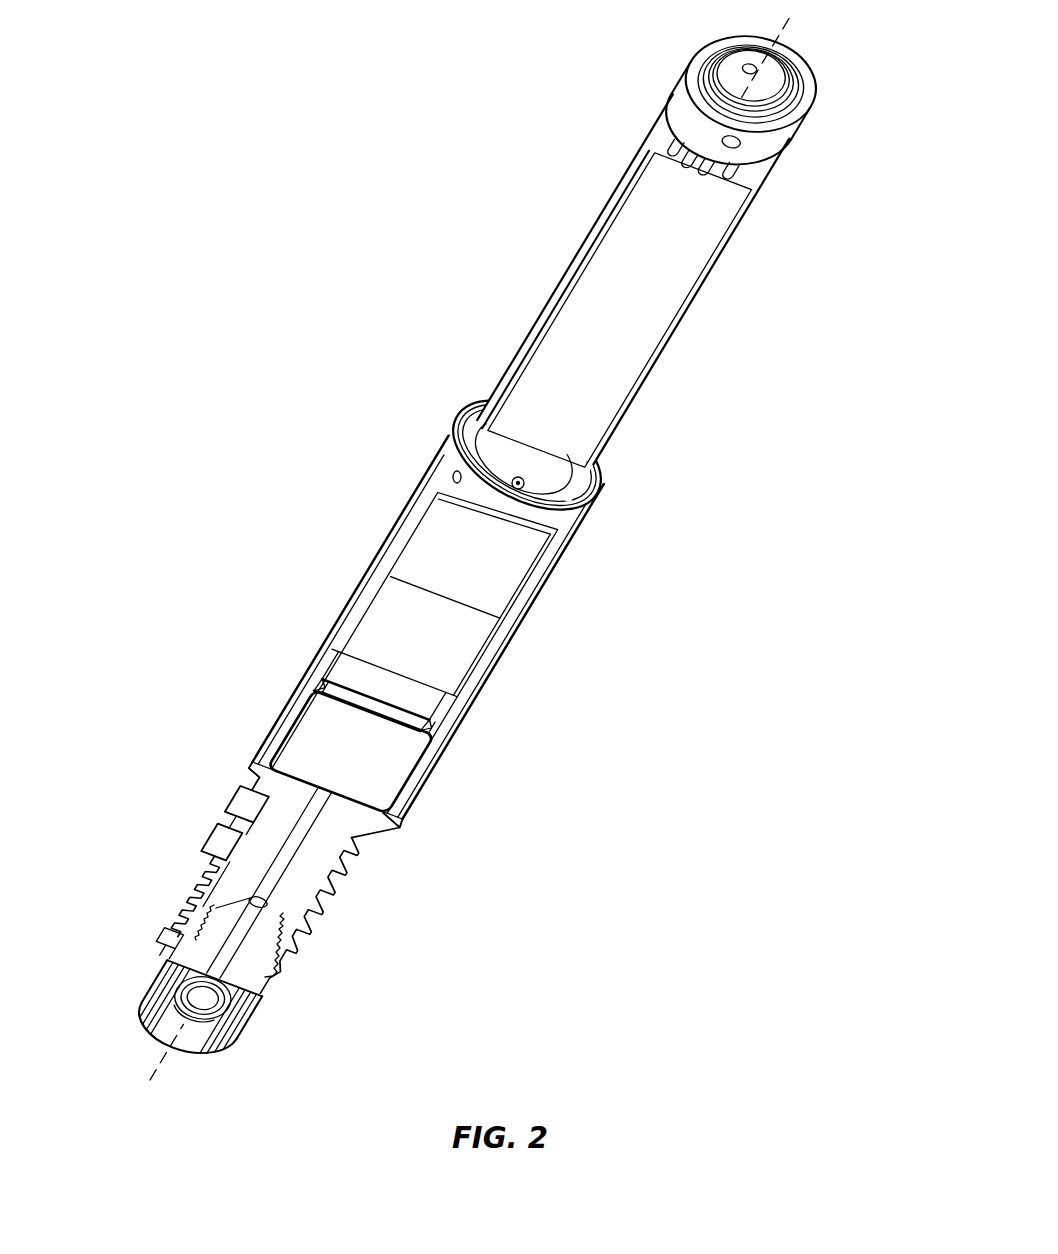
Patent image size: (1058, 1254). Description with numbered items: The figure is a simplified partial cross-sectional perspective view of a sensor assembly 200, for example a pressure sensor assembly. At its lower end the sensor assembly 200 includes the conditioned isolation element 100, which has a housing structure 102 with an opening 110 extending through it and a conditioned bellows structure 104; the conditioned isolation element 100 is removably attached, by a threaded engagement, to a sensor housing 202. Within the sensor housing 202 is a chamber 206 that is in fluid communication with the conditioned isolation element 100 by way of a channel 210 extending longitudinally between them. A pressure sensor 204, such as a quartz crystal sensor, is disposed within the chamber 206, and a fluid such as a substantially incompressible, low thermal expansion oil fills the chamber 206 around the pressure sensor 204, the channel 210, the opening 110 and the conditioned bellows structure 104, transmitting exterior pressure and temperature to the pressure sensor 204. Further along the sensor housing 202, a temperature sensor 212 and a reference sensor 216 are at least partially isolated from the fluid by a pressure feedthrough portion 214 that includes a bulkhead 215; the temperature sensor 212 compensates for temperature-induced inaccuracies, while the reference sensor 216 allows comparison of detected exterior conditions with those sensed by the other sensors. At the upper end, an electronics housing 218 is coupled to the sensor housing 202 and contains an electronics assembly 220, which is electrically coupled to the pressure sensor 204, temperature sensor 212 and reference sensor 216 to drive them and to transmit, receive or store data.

The conditioned isolation element 100 is at (160, 928).
The housing structure 102 is at (257, 952).
The conditioned bellows structure 104 is at (260, 1002).
The opening 110 is at (248, 923).
The sensor assembly 200 is at (355, 268).
The sensor housing 202 is at (263, 748).
The pressure sensor 204 is at (323, 713).
The chamber 206 is at (314, 677).
The channel 210 is at (293, 843).
The temperature sensor 212 is at (392, 607).
The pressure feedthrough portion 214 is at (353, 670).
The bulkhead 215 is at (433, 707).
The reference sensor 216 is at (495, 570).
The electronics housing 218 is at (613, 172).
The electronics assembly 220 is at (648, 292).